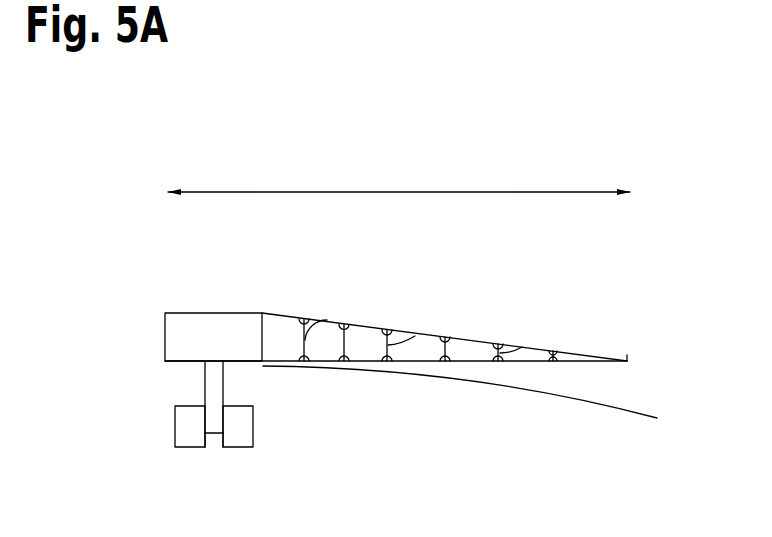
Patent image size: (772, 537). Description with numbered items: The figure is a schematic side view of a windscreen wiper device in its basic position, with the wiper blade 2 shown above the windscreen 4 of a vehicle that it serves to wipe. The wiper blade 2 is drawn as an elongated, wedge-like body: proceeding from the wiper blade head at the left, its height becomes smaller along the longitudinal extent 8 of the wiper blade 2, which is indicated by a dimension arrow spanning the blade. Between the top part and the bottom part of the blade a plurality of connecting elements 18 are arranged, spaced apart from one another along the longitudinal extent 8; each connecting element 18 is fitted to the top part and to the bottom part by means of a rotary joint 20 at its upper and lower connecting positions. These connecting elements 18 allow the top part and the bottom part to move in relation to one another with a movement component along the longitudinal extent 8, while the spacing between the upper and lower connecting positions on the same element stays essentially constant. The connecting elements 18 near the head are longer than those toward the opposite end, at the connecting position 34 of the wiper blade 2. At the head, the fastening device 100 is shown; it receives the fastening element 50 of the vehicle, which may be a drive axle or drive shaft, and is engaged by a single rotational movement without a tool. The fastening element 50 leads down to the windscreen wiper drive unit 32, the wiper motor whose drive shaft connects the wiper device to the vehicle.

The wiper blade 2 is at (645, 239).
The windscreen 4 is at (607, 410).
The longitudinal extent 8 is at (383, 192).
The connecting elements 18 is at (327, 320).
The rotary joint 20 is at (304, 319).
The windscreen wiper drive unit 32 is at (175, 436).
The connecting position 34 is at (630, 360).
The fastening element 50 is at (212, 387).
The fastening device 100 is at (178, 338).